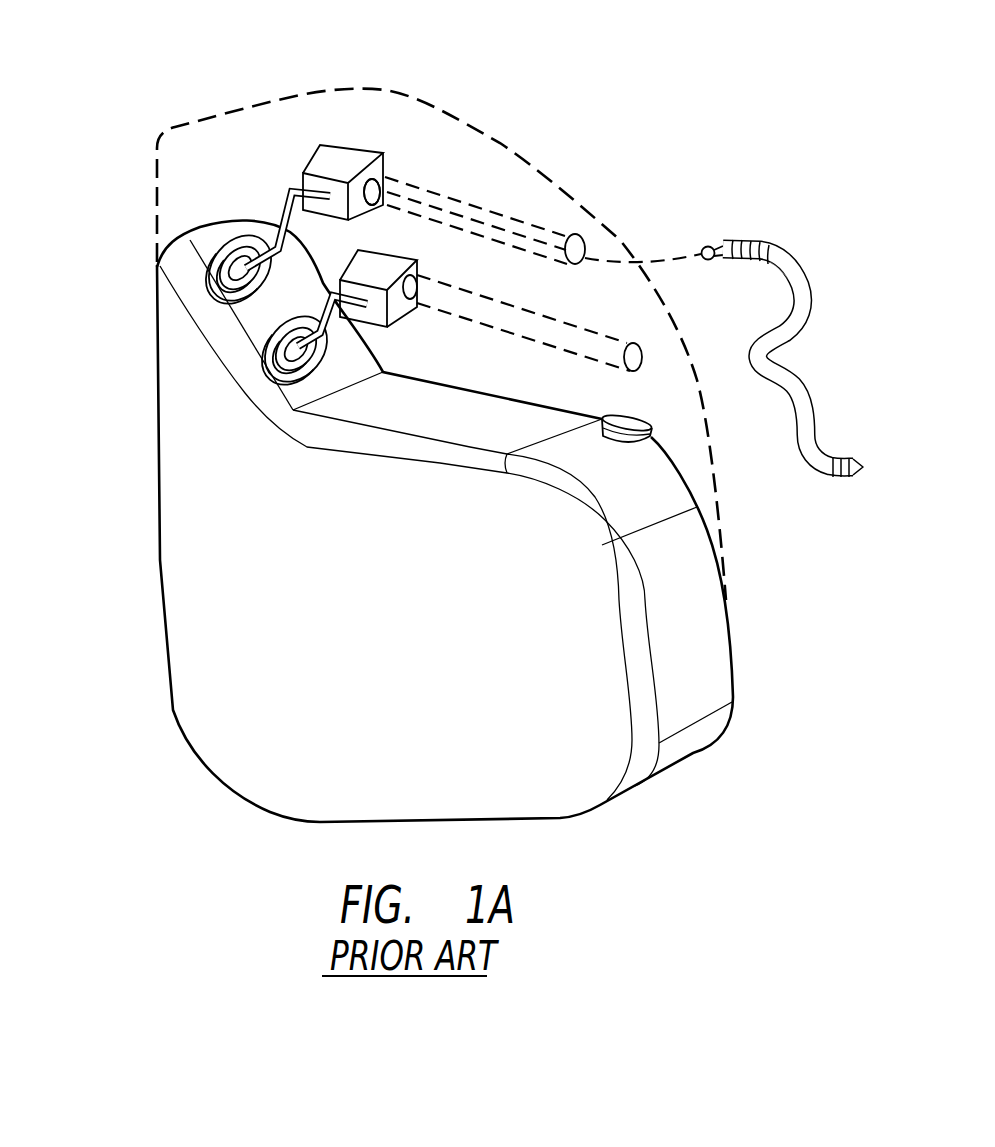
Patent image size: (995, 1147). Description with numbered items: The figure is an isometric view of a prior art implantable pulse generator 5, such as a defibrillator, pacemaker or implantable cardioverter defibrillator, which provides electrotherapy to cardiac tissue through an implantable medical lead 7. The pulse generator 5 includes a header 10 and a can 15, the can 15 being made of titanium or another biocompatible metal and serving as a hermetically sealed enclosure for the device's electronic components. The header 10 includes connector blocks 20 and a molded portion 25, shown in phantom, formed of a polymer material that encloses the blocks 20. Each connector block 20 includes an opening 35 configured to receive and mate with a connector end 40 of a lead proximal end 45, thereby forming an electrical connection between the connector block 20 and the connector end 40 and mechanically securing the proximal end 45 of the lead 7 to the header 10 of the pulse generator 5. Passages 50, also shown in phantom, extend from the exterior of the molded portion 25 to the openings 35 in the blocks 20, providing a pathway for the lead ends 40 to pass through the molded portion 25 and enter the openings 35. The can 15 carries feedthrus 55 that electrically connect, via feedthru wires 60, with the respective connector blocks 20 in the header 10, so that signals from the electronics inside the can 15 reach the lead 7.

The implantable pulse generator 5 is at (86, 116).
The implantable medical lead 7 is at (768, 410).
The header 10 is at (157, 193).
The can 15 is at (173, 710).
The connector block 20 is at (360, 153).
The molded portion 25 is at (504, 146).
The opening 35 is at (380, 167).
The connector end 40 is at (793, 243).
The lead proximal end 45 is at (738, 276).
The passage 50 is at (586, 238).
The feedthru 55 is at (227, 270).
The feedthru wire 60 is at (288, 205).